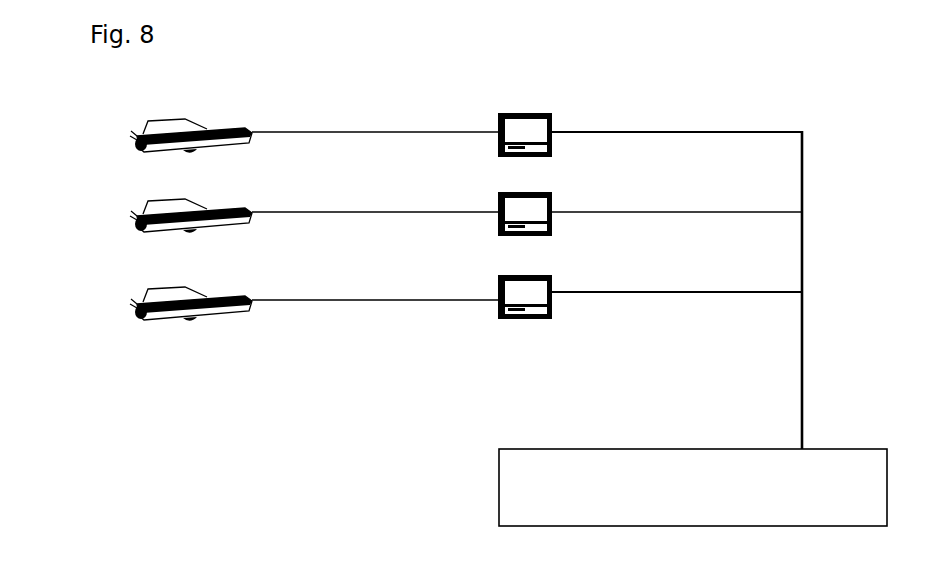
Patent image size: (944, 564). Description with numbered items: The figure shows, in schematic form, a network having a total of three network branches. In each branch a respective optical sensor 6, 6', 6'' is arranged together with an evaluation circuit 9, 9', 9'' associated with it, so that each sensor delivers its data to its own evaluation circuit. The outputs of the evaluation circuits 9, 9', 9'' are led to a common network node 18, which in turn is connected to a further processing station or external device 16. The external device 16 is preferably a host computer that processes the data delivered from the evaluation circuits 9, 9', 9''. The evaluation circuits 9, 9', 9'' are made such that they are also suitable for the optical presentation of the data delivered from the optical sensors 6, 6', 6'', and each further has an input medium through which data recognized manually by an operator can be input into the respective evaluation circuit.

The optical sensor 6 is at (314, 119).
The optical sensor 6' is at (314, 203).
The optical sensor 6'' is at (314, 290).
The evaluation circuit 9 is at (547, 121).
The evaluation circuit 9' is at (549, 203).
The evaluation circuit 9'' is at (552, 290).
The external device 16 is at (522, 480).
The common network node 18 is at (803, 293).